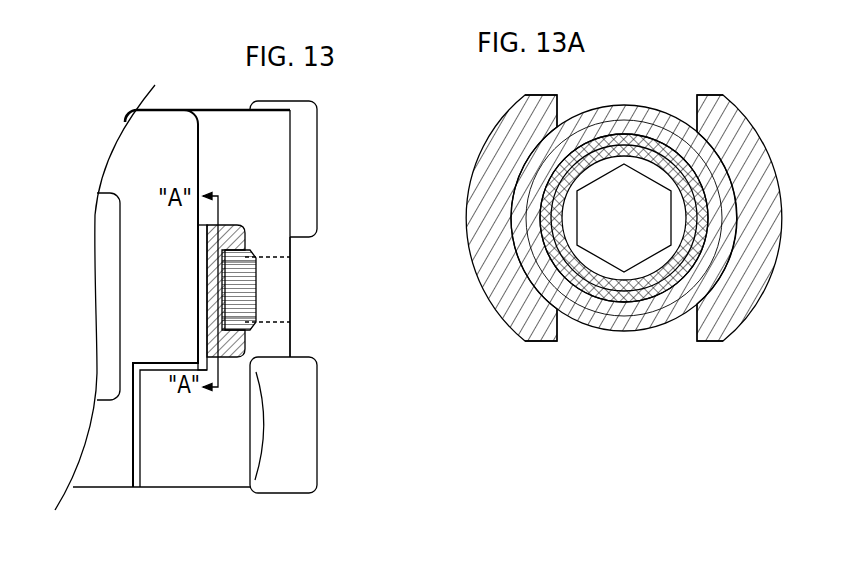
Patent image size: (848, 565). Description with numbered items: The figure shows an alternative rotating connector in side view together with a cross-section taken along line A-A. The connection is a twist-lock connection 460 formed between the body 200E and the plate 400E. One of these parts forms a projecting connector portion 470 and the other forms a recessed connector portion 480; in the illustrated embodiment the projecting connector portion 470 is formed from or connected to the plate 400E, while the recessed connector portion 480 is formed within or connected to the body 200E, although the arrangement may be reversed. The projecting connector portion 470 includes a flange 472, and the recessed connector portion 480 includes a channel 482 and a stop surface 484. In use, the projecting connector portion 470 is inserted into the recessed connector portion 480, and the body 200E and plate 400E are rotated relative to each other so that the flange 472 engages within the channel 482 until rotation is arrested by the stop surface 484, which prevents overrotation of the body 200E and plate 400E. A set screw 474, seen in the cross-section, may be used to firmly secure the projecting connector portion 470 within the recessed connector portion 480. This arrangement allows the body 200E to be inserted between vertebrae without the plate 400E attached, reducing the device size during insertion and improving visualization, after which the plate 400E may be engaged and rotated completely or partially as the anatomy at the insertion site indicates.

In FIG. 13, the body 200E is at (128, 156).
In FIG. 13, the plate 400E is at (337, 442).
In FIG. 13, the twist-lock connection 460 is at (236, 196).
In FIG. 13, the projecting connector portion 470 is at (253, 277).
In FIG. 13A, the projecting connector portion 470 is at (620, 333).
In FIG. 13A, the flange 472 is at (727, 250).
In FIG. 13A, the set screw 474 is at (642, 290).
In FIG. 13, the recessed connector portion 480 is at (235, 226).
In FIG. 13A, the recessed connector portion 480 is at (470, 257).
In FIG. 13A, the channel 482 is at (563, 108).
In FIG. 13A, the stop surface 484 is at (523, 307).